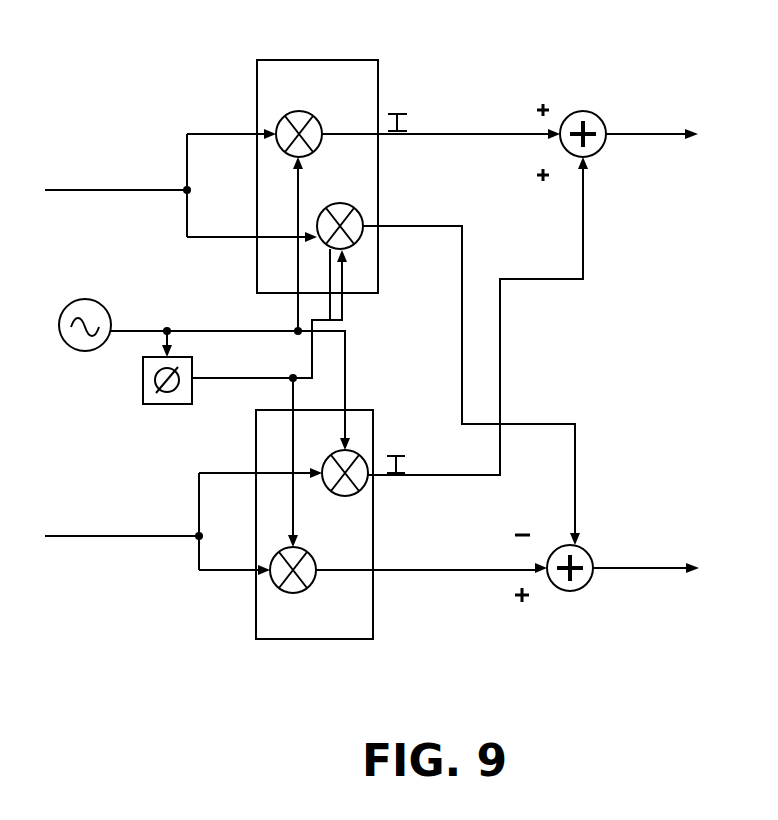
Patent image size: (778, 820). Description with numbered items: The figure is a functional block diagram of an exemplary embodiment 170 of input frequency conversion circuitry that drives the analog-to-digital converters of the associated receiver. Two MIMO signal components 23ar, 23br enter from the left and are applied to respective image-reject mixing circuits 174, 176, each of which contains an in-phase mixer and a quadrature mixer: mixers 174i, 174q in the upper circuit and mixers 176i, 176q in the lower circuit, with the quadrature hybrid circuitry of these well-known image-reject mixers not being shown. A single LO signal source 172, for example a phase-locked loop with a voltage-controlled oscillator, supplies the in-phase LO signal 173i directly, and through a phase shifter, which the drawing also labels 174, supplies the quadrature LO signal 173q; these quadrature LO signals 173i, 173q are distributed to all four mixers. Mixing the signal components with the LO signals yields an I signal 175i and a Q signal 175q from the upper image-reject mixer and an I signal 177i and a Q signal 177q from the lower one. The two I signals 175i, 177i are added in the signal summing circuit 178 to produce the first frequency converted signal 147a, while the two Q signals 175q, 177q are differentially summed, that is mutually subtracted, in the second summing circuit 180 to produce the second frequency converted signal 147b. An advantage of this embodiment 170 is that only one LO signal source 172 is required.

The input frequency conversion circuitry 170 is at (84, 675).
The LO signal source 172 is at (85, 352).
The quadrature LO signal 173i is at (143, 331).
The quadrature LO signal 173q is at (242, 379).
The image-reject mixing circuit 174 is at (309, 60).
The mixer 174i is at (334, 103).
The mixer 174q is at (350, 205).
The I signal 175i is at (460, 132).
The Q signal 175q is at (450, 218).
The image-reject mixing circuit 176 is at (313, 639).
The mixer 176i is at (329, 490).
The mixer 176q is at (319, 577).
The I signal 177i is at (422, 476).
The Q signal 177q is at (415, 570).
The signal summing circuit 178 is at (601, 115).
The second summing circuit 180 is at (577, 592).
The MIMO signal component 23ar is at (57, 190).
The MIMO signal component 23br is at (75, 536).
The first frequency converted signal 147a is at (655, 137).
The second frequency converted signal 147b is at (650, 563).